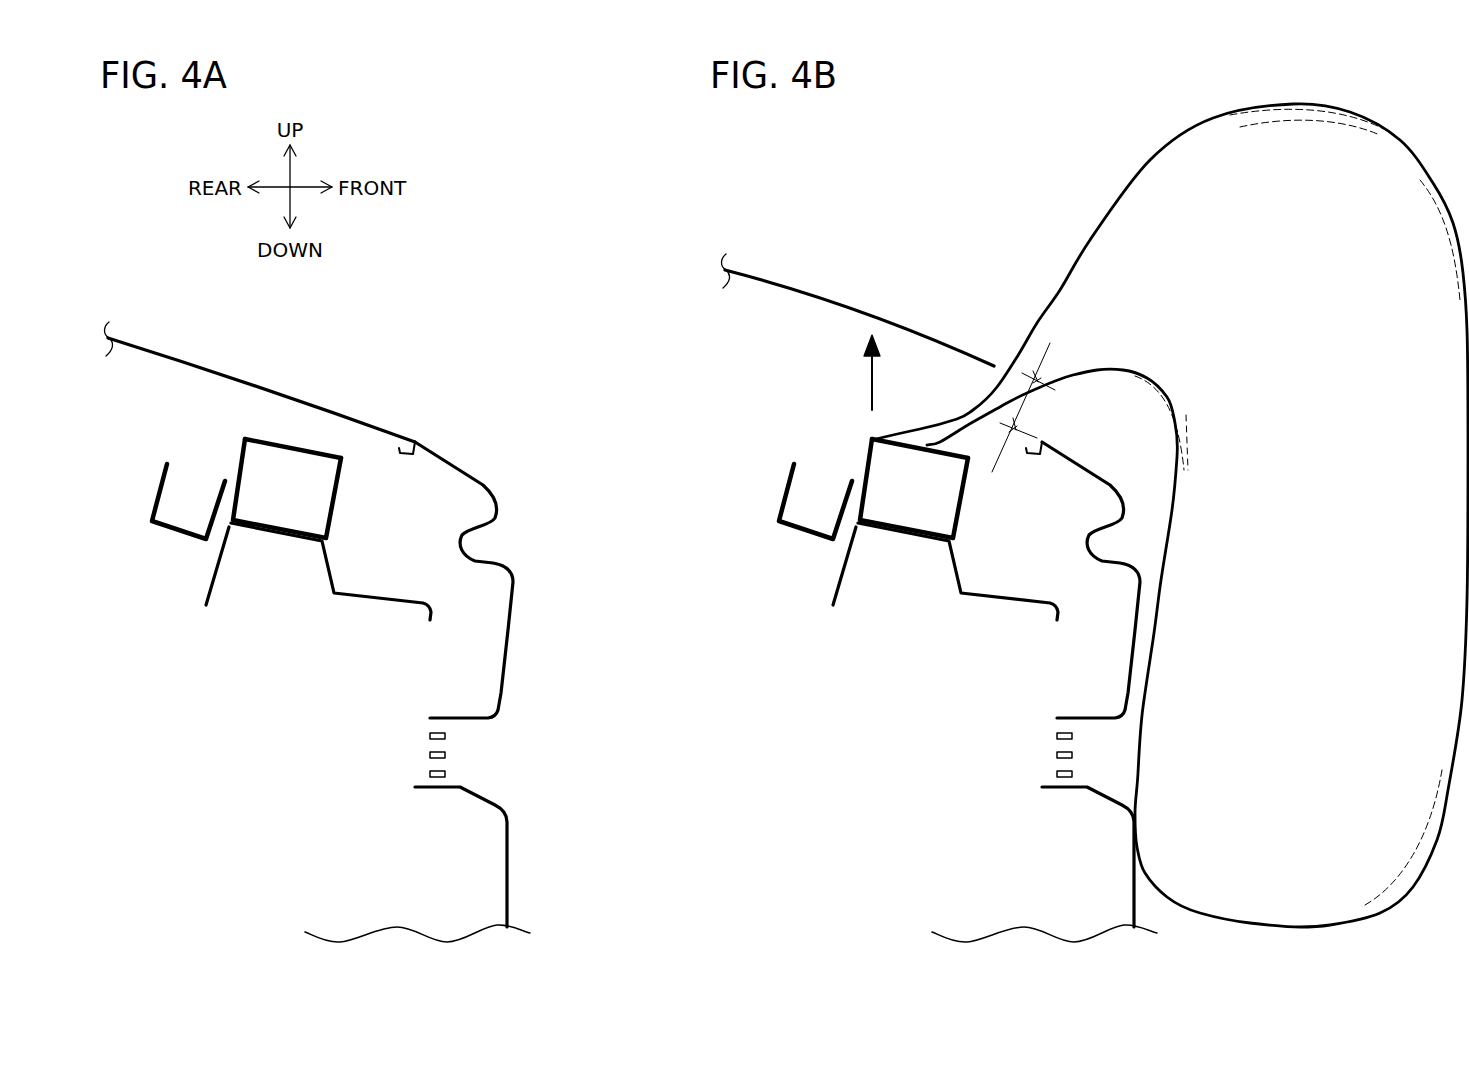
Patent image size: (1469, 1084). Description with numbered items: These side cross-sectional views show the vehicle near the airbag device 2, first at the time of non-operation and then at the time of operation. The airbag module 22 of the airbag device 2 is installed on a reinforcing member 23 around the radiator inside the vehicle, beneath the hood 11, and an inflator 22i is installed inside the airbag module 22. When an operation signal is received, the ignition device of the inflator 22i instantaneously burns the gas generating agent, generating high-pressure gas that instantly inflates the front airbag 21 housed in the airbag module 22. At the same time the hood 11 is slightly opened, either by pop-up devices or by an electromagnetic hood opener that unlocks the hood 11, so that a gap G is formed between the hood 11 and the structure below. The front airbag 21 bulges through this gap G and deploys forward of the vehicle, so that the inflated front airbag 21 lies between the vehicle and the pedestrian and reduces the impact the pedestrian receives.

In FIG. 4A, the hood 11 is at (323, 400).
In FIG. 4B, the hood 11 is at (887, 318).
In FIG. 4A, the airbag device 2 is at (317, 487).
In FIG. 4B, the airbag device 2 is at (944, 487).
In FIG. 4A, the airbag module 22 is at (317, 487).
In FIG. 4B, the airbag module 22 is at (944, 487).
In FIG. 4A, the inflator 22i is at (282, 487).
In FIG. 4B, the inflator 22i is at (909, 487).
In FIG. 4A, the reinforcing member 23 is at (323, 567).
In FIG. 4B, the reinforcing member 23 is at (950, 567).
In FIG. 4B, the front airbag 21 is at (1087, 233).
In FIG. 4B, the gap G is at (1000, 457).